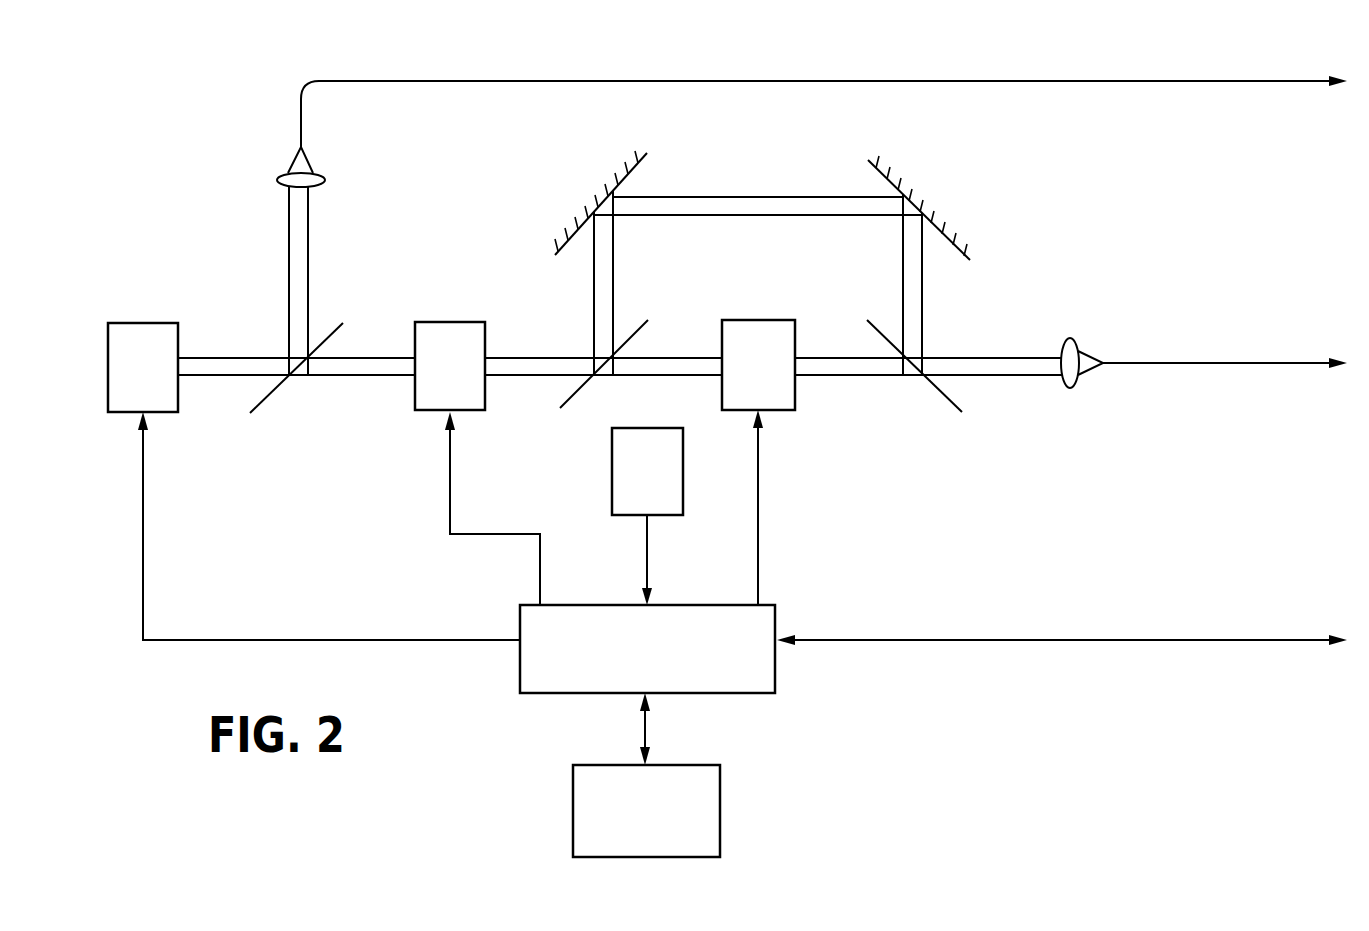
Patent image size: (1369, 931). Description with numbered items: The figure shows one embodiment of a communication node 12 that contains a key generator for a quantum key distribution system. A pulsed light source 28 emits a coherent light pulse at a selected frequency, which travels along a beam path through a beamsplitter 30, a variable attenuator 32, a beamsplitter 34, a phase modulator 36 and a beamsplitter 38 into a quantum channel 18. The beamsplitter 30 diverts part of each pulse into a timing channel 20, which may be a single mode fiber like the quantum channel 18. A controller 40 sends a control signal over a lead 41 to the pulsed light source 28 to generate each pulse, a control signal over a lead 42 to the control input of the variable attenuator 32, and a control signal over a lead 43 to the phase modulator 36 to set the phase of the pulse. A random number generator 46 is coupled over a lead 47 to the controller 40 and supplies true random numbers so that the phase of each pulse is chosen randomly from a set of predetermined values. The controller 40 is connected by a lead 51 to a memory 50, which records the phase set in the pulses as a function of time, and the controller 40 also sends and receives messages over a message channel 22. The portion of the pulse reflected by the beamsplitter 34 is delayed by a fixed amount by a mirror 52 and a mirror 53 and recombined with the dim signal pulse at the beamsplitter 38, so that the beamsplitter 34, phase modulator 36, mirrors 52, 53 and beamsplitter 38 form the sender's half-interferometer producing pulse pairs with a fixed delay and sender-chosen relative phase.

The communication node 12 is at (245, 137).
The quantum channel 18 is at (1250, 362).
The timing channel 20 is at (1107, 80).
The message channel 22 is at (1243, 638).
The pulsed light source 28 is at (160, 330).
The beamsplitter 30 is at (268, 400).
The variable attenuator 32 is at (429, 403).
The beamsplitter 34 is at (580, 392).
The phase modulator 36 is at (766, 320).
The beamsplitter 38 is at (947, 402).
The controller 40 is at (565, 687).
The lead 41 is at (325, 640).
The lead 42 is at (450, 478).
The lead 43 is at (758, 510).
The random number generator 46 is at (683, 487).
The lead 47 is at (647, 560).
The memory 50 is at (707, 793).
The lead 51 is at (645, 726).
The mirror 52 is at (640, 172).
The mirror 53 is at (882, 180).